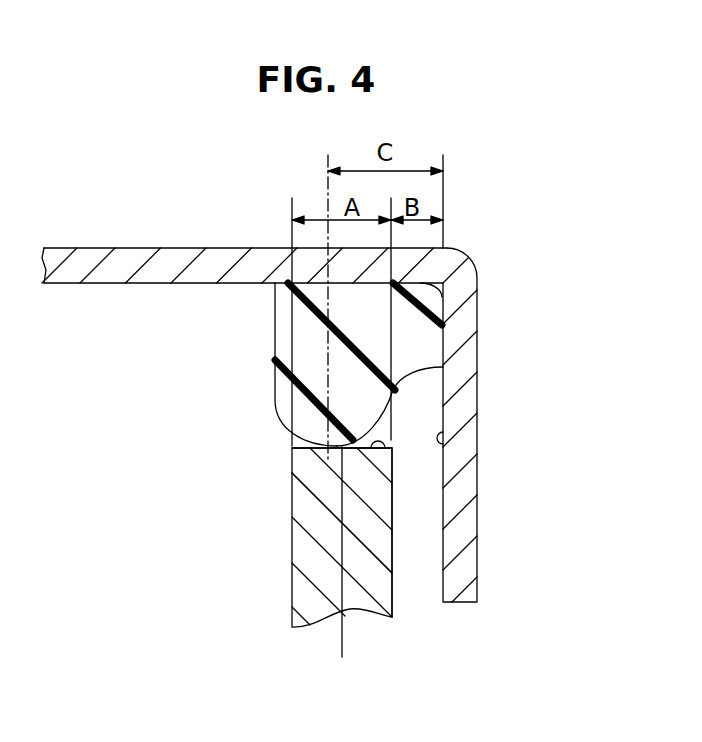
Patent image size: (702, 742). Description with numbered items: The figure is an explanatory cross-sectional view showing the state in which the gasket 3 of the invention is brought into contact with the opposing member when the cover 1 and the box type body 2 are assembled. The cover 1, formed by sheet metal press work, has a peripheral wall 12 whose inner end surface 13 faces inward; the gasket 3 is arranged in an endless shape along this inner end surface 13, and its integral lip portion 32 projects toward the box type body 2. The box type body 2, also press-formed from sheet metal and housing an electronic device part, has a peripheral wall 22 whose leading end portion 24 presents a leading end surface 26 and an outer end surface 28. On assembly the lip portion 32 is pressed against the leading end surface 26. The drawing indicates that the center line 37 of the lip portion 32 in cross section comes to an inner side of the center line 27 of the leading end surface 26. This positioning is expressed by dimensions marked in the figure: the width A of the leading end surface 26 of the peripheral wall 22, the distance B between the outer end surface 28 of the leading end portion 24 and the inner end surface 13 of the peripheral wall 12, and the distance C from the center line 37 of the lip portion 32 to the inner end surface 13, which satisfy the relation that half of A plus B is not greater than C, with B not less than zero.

The cover 1 is at (183, 268).
The box type body 2 is at (362, 558).
The gasket 3 is at (367, 308).
The peripheral wall 12 is at (455, 412).
The inner end surface 13 is at (450, 447).
The peripheral wall 22 is at (362, 530).
The leading end portion 24 is at (370, 488).
The leading end surface 26 is at (392, 453).
The center line 27 is at (343, 572).
The outer end surface 28 is at (393, 543).
The lip portion 32 is at (350, 412).
The center line 37 is at (330, 345).